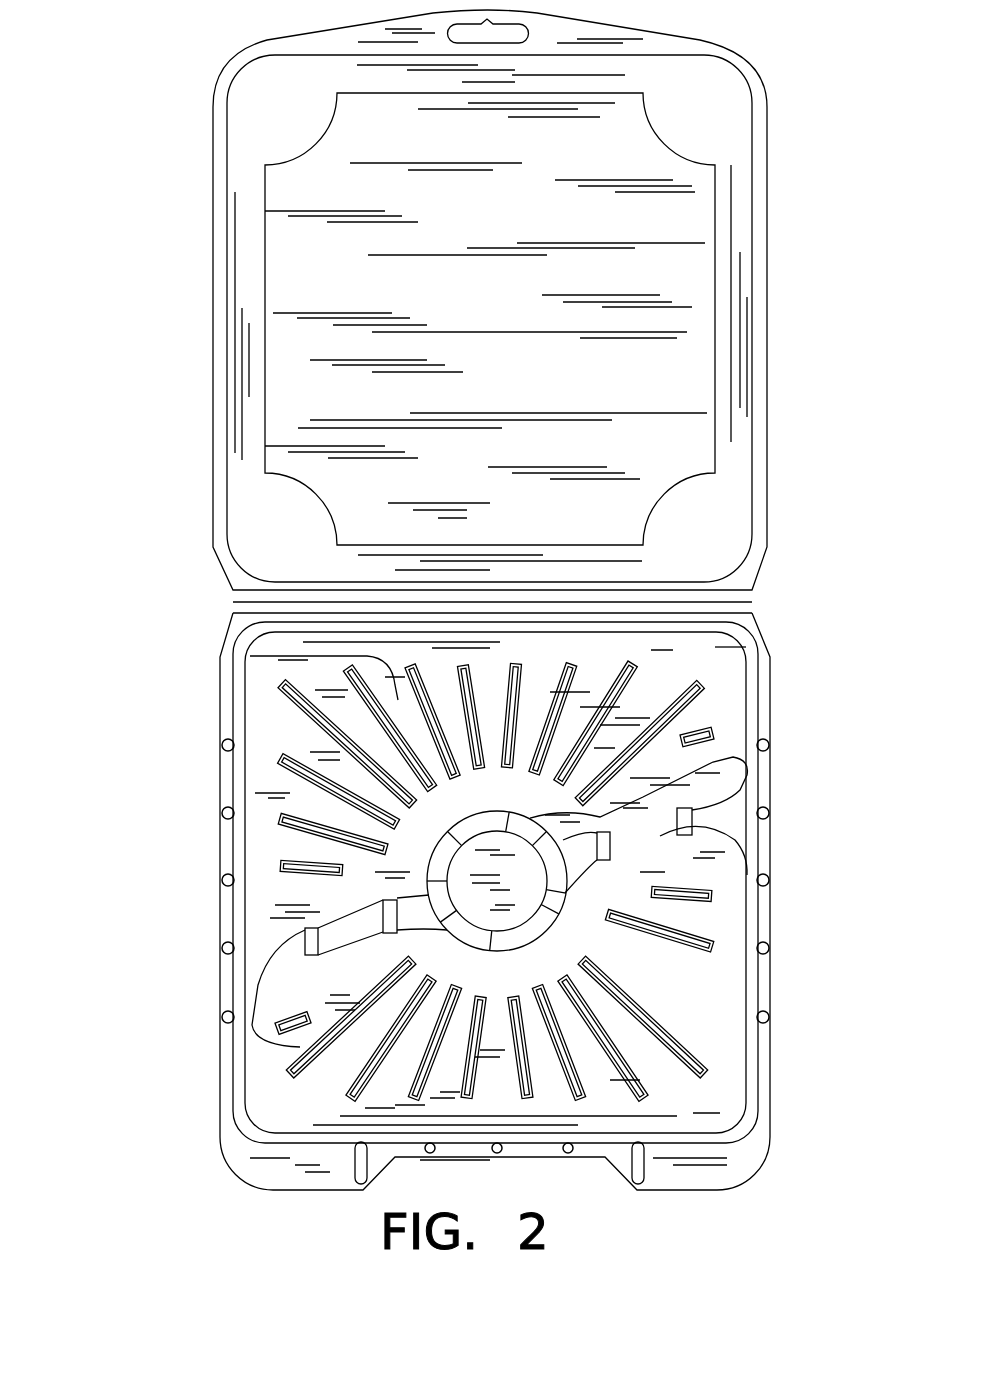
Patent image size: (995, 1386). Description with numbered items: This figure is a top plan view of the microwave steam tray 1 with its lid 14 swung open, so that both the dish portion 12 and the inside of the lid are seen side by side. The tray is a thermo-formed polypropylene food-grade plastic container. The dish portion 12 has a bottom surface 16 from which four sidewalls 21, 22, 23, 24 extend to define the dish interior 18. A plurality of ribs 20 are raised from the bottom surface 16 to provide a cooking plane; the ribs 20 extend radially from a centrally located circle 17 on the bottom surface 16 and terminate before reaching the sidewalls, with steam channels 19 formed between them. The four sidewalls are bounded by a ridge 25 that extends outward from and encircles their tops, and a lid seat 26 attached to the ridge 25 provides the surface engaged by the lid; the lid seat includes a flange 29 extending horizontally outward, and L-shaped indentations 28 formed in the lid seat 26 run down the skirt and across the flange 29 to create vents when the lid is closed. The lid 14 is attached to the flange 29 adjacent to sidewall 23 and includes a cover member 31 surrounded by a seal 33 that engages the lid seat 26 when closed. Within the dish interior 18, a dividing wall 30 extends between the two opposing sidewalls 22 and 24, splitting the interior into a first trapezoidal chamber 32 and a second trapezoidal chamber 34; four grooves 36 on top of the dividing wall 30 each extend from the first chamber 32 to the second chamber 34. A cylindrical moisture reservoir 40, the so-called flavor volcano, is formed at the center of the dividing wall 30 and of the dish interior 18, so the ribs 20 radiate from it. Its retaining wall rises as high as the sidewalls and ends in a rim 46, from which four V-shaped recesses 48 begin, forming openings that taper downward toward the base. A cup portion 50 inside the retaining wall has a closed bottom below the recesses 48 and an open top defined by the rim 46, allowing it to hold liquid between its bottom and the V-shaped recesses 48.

The microwave steam tray 1 is at (104, 523).
The dish portion 12 is at (725, 1050).
The lid 14 is at (687, 367).
The bottom surface 16 is at (713, 1093).
The centrally located circle 17 is at (705, 768).
The dish interior 18 is at (283, 1010).
The steam channels 19 is at (660, 690).
The ribs 20 is at (291, 752).
The sidewall 21 is at (462, 915).
The sidewall 22 is at (243, 855).
The sidewall 23 is at (357, 627).
The sidewall 24 is at (760, 828).
The ridge 25 is at (685, 1137).
The lid seat 26 is at (770, 1057).
The L-shaped indentations 28 is at (233, 950).
The flange 29 is at (233, 1117).
The dividing wall 30 is at (358, 927).
The cover member 31 is at (603, 220).
The first trapezoidal chamber 32 is at (608, 1105).
The seal 33 is at (222, 358).
The second trapezoidal chamber 34 is at (603, 665).
The grooves 36 is at (297, 1047).
The moisture reservoir 40 is at (433, 850).
The rim 46 is at (470, 823).
The V-shaped recesses 48 is at (548, 906).
The cup portion 50 is at (497, 881).